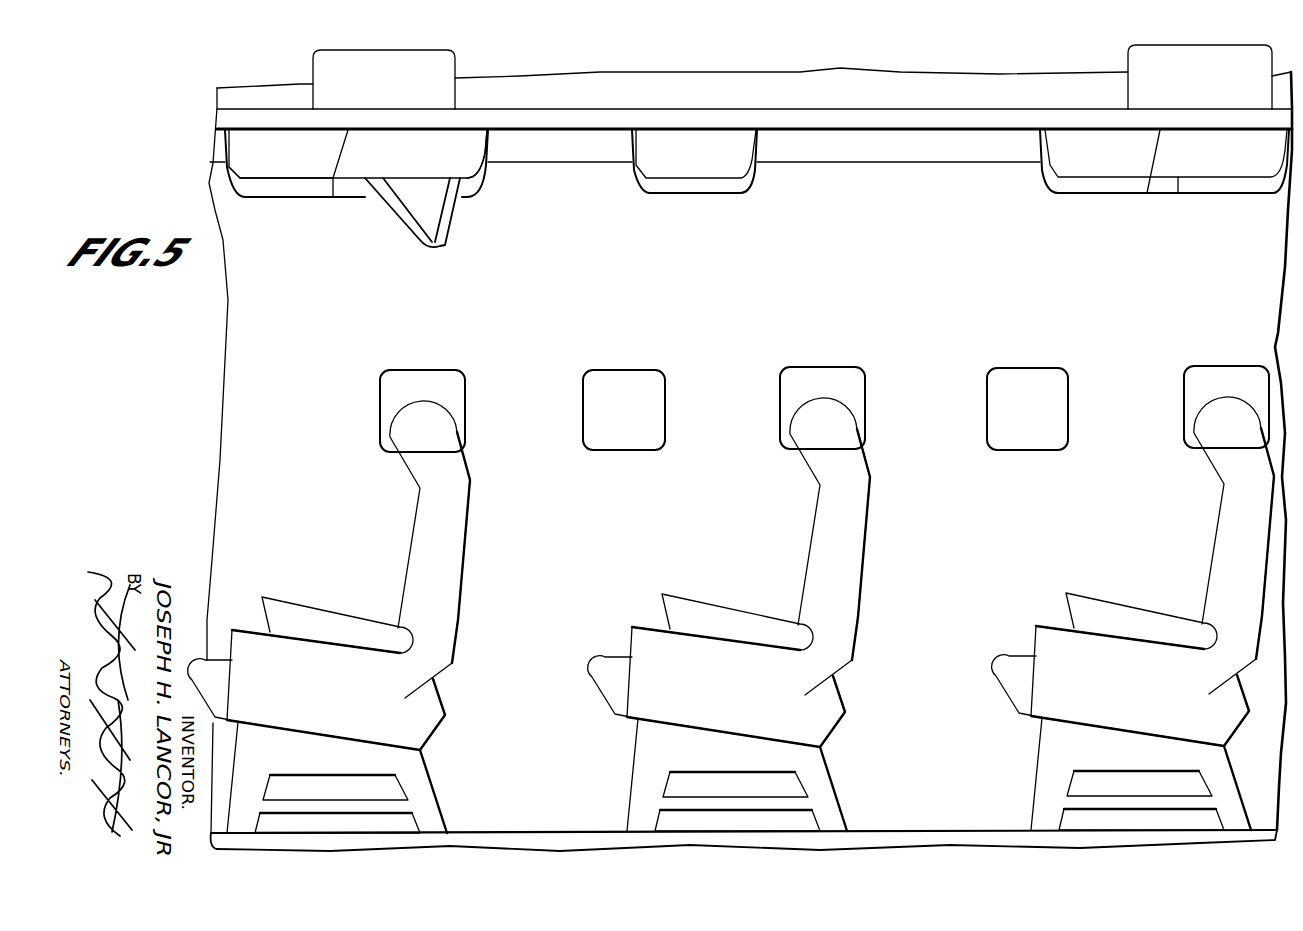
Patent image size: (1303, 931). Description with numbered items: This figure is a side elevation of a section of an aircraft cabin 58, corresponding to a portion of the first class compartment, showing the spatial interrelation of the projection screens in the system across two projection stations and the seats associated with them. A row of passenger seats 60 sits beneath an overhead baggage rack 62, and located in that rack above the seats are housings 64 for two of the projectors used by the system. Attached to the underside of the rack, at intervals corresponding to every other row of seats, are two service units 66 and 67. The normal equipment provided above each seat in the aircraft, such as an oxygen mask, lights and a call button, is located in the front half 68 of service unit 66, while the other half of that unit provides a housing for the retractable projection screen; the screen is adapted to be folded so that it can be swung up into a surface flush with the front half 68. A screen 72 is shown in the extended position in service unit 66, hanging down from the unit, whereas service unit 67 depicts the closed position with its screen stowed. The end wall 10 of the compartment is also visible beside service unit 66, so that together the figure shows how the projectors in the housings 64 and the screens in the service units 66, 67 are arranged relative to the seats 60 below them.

The passenger cabin interior 58 is at (207, 391).
The passenger seats 60 is at (405, 554).
The overhead baggage rack 62 is at (993, 78).
The housings 64 is at (457, 52).
The service unit 66 is at (335, 208).
The service unit 67 is at (1152, 198).
The front half 68 is at (232, 183).
The compartment end wall 10 is at (484, 178).
The screen 72 is at (453, 217).